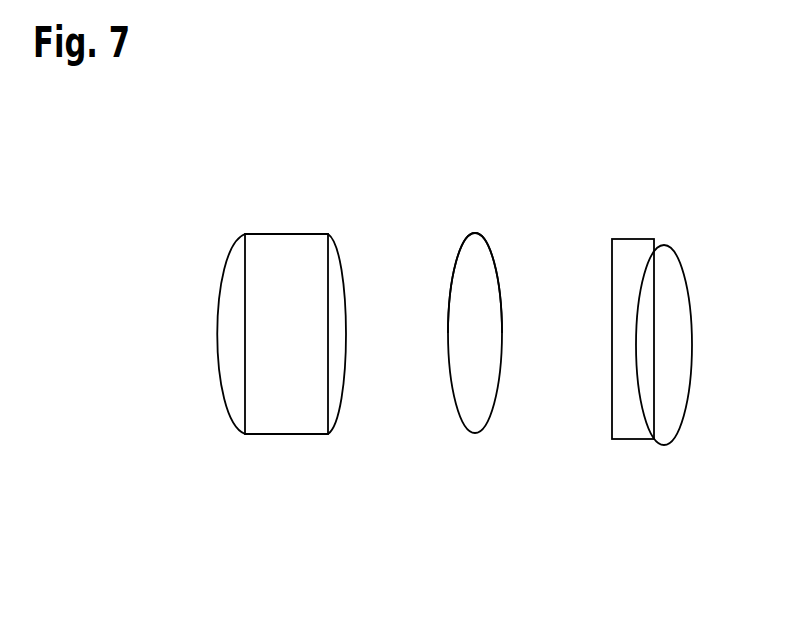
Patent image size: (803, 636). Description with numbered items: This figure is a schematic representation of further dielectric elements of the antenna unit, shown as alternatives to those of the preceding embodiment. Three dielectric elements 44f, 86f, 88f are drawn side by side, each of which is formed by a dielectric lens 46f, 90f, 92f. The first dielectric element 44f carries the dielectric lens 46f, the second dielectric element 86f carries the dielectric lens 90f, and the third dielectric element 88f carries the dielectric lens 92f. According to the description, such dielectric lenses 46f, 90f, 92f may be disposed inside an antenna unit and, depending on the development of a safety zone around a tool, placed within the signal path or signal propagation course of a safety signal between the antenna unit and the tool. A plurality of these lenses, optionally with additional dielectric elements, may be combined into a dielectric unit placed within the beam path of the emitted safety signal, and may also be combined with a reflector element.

The dielectric element 44f is at (278, 418).
The dielectric lens 46f is at (280, 240).
The dielectric element 86f is at (476, 428).
The dielectric lens 90f is at (473, 238).
The dielectric element 88f is at (636, 425).
The dielectric lens 92f is at (634, 245).